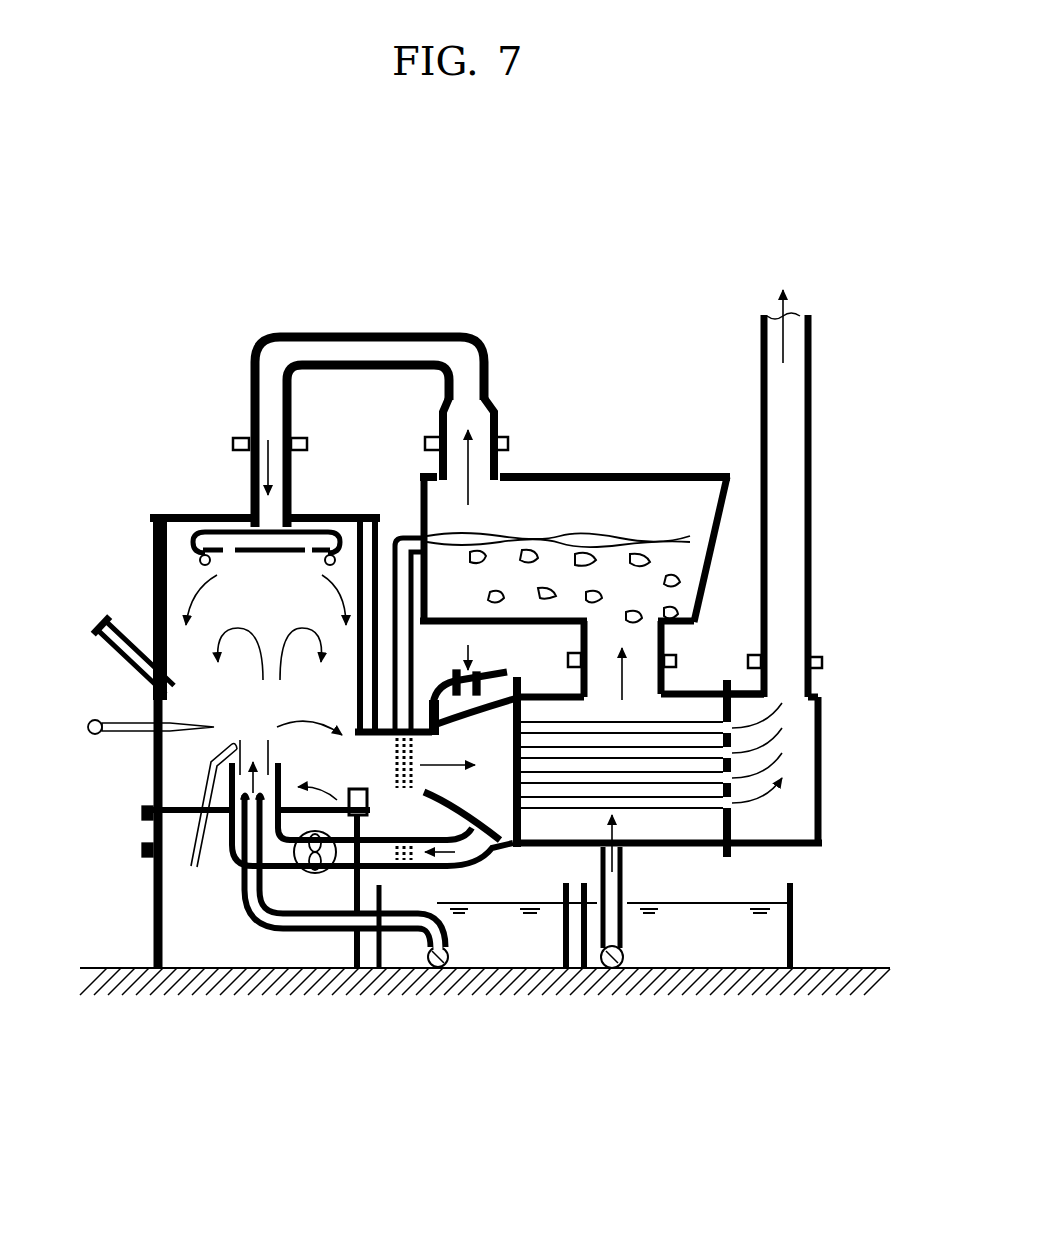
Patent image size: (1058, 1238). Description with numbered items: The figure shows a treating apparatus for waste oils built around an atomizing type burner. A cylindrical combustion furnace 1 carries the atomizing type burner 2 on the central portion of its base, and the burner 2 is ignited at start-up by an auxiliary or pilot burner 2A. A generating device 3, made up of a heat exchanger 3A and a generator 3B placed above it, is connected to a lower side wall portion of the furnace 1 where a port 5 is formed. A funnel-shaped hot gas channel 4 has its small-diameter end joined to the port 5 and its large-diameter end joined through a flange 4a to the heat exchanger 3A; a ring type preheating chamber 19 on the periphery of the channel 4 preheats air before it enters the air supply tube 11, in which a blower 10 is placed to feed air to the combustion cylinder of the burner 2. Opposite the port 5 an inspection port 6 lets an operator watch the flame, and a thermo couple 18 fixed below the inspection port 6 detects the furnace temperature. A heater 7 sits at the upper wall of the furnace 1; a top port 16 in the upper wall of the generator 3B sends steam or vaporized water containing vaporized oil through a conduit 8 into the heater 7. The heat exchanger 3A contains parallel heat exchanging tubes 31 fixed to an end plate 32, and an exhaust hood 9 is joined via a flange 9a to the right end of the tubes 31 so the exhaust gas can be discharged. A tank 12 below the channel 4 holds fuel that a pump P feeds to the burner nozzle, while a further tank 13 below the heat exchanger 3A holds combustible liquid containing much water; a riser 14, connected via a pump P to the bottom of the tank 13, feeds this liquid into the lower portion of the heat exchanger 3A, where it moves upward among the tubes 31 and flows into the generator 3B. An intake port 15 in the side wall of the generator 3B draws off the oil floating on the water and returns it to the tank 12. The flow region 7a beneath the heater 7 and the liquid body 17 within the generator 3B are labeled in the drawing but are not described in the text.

The combustion furnace 1 is at (146, 527).
The atomizing type burner 2 is at (220, 786).
The auxiliary or pilot burner 2A is at (226, 750).
The generating device 3 is at (677, 686).
The heat exchanger 3A is at (713, 850).
The generator 3B is at (687, 472).
The hot gas channel 4 is at (490, 792).
The flange 4a is at (514, 805).
The port 5 is at (378, 900).
The inspection port 6 is at (122, 617).
The heater 7 is at (218, 546).
The diffuser outlet flow 7a is at (229, 555).
The conduit 8 is at (393, 333).
The exhaust hood 9 is at (795, 748).
The flange 9a is at (740, 680).
The blower 10 is at (290, 935).
The air supply tube 11 is at (266, 880).
The tank 12 is at (578, 925).
The further tank 13 is at (793, 972).
The riser 14 is at (624, 875).
The intake port 15 is at (403, 535).
The top port 16 is at (488, 378).
The water 17 is at (614, 533).
The thermo couple 18 is at (207, 707).
The ring type preheating chamber 19 is at (492, 672).
The heat exchanging tubes 31 is at (684, 810).
The end plate 32 is at (733, 827).
The pump P is at (420, 935).